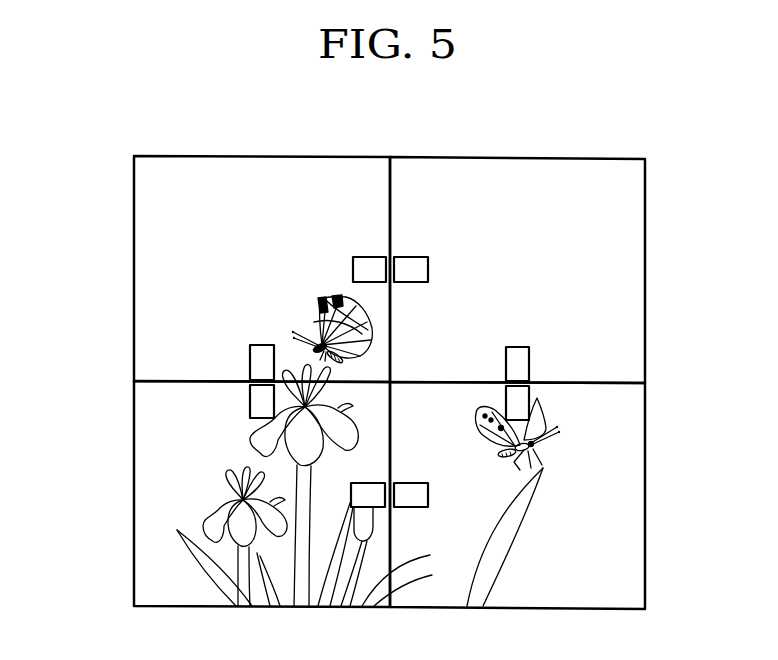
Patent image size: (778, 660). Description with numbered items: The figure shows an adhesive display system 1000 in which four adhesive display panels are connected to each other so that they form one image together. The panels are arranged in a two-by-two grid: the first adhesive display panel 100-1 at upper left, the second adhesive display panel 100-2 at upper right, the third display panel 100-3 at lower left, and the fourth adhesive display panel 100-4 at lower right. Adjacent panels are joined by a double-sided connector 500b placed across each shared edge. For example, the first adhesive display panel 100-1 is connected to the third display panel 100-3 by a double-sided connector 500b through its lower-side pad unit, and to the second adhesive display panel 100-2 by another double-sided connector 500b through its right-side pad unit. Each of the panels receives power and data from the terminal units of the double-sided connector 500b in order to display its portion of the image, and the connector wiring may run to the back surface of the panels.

The adhesive display system 1000 is at (575, 147).
The first adhesive display panel 100-1 is at (134, 253).
The second adhesive display panel 100-2 is at (645, 257).
The third display panel 100-3 is at (134, 491).
The fourth adhesive display panel 100-4 is at (645, 501).
The double-sided connector 500b is at (413, 257).